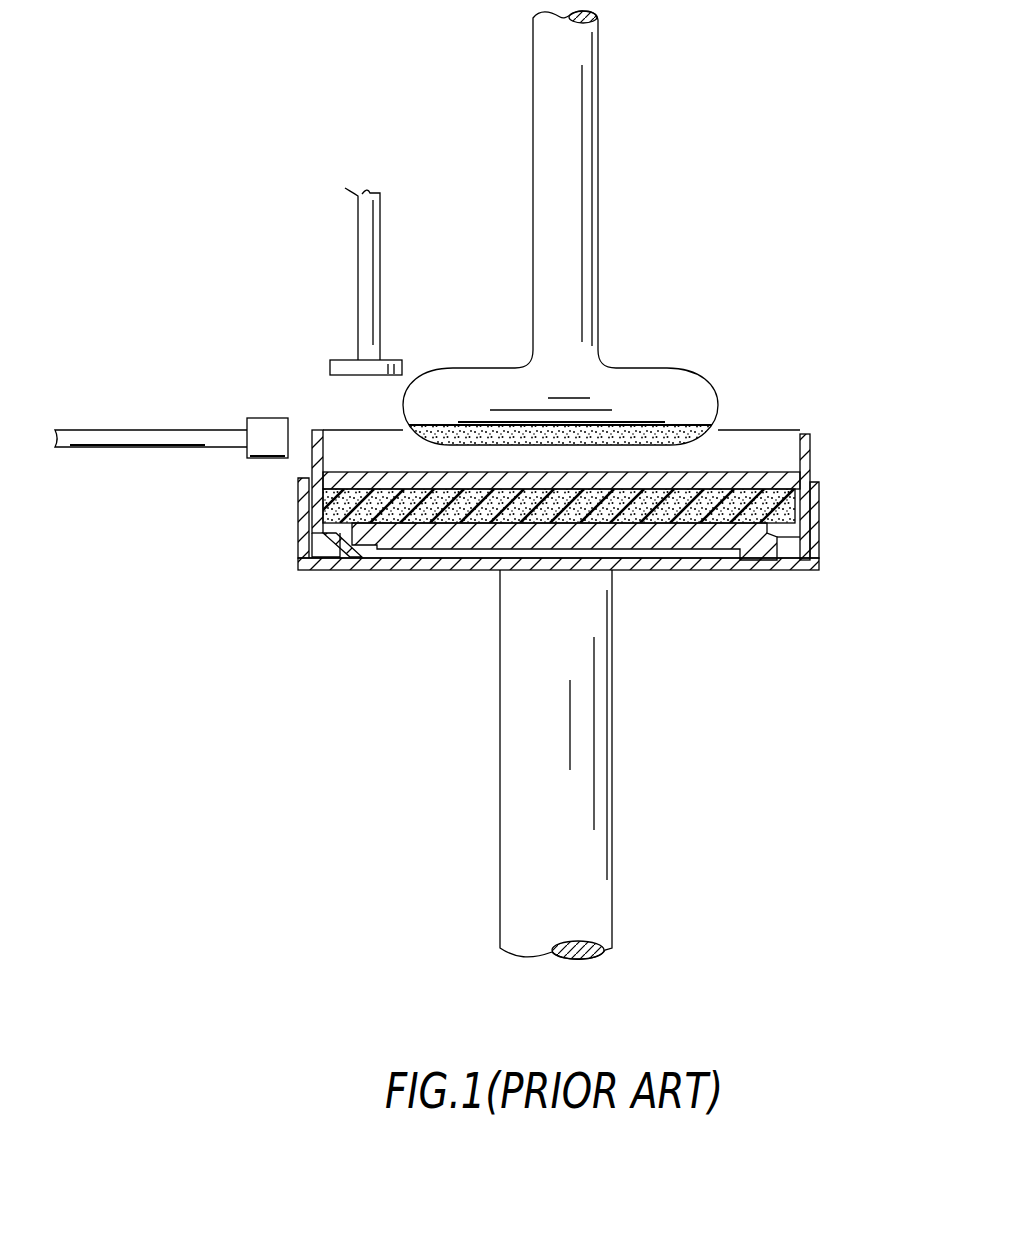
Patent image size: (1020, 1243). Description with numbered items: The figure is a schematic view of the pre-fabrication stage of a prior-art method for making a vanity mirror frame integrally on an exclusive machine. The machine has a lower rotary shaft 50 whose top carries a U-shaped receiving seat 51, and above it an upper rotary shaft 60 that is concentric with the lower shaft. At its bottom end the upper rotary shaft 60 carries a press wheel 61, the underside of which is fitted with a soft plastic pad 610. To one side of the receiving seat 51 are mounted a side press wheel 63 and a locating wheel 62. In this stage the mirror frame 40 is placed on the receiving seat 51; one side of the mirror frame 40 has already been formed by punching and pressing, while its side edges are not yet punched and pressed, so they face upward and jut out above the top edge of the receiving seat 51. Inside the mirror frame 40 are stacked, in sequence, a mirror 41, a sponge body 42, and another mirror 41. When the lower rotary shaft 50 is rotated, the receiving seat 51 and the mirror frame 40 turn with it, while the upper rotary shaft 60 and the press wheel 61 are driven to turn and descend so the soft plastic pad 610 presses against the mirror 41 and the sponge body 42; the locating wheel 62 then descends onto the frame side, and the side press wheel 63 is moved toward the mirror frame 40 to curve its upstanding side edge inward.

The mirror frame 40 is at (820, 495).
The mirror 41 is at (767, 482).
The sponge body 42 is at (732, 500).
The lower rotary shaft 50 is at (570, 815).
The receiving seat 51 is at (810, 572).
The upper rotary shaft 60 is at (560, 121).
The press wheel 61 is at (635, 388).
The soft plastic pad 610 is at (696, 432).
The locating wheel 62 is at (380, 368).
The side press wheel 63 is at (220, 440).